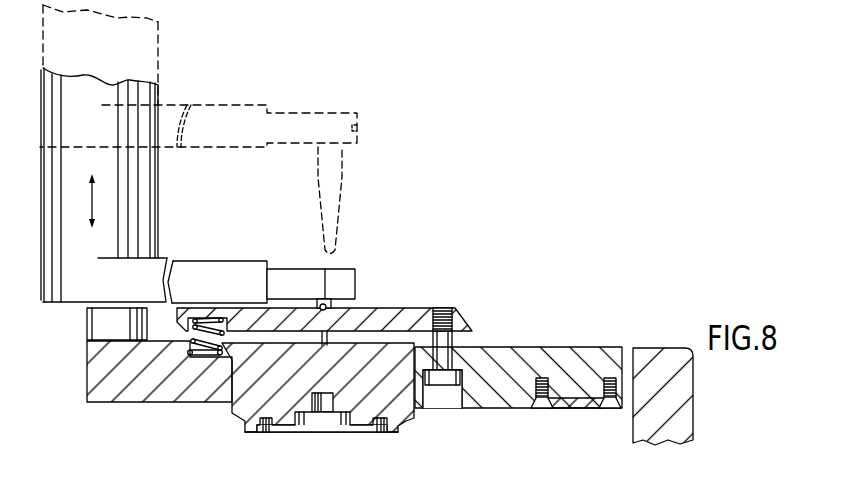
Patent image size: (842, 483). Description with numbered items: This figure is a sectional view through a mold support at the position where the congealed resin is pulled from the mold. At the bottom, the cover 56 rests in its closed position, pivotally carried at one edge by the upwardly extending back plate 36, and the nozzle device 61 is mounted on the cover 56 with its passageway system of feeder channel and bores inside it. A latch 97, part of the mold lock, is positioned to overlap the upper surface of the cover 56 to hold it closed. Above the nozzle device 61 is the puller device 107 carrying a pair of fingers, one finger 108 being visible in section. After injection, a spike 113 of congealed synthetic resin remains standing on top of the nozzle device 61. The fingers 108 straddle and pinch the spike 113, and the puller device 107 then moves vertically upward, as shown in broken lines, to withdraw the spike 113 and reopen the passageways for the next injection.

The back plate 36 is at (691, 410).
The cover 56 is at (513, 344).
The nozzle device 61 is at (425, 306).
The latch 97 is at (100, 321).
The puller device 107 is at (158, 100).
The finger 108 is at (360, 128).
The spike 113 is at (333, 305).